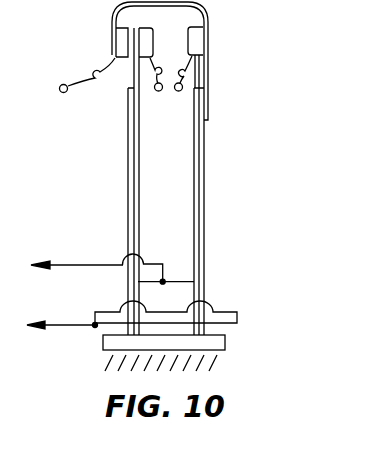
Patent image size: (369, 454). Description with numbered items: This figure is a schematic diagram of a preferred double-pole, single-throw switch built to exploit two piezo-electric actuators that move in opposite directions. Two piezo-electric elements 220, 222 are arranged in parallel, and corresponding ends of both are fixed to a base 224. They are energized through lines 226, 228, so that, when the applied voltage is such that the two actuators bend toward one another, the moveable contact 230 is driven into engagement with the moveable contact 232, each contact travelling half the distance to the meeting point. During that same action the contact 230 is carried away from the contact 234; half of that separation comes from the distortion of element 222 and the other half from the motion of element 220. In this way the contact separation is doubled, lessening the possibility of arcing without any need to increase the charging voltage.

The piezo-electric element 220 is at (204, 187).
The piezo-electric element 222 is at (128, 184).
The base 224 is at (225, 341).
The line 226 is at (87, 263).
The line 228 is at (63, 327).
The moveable contact 230 is at (156, 40).
The moveable contact 232 is at (202, 43).
The contact 234 is at (121, 62).